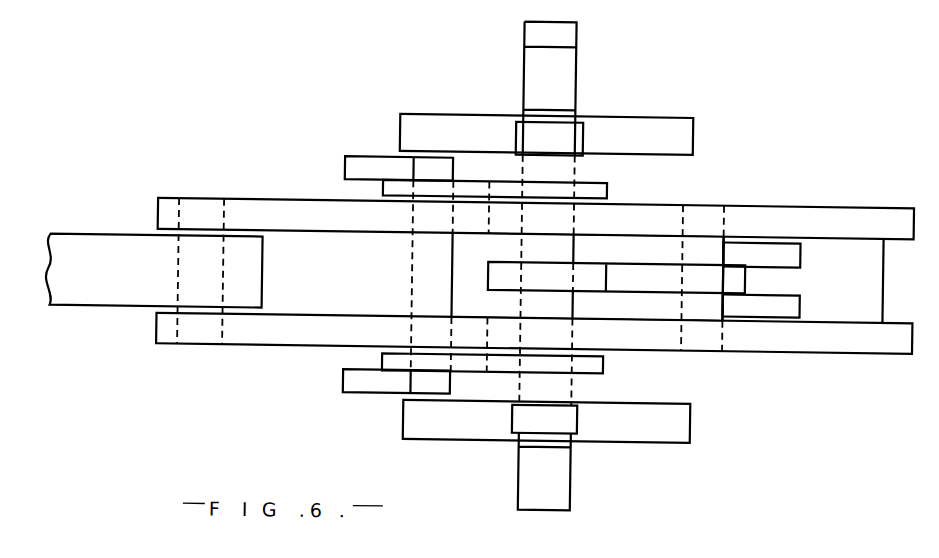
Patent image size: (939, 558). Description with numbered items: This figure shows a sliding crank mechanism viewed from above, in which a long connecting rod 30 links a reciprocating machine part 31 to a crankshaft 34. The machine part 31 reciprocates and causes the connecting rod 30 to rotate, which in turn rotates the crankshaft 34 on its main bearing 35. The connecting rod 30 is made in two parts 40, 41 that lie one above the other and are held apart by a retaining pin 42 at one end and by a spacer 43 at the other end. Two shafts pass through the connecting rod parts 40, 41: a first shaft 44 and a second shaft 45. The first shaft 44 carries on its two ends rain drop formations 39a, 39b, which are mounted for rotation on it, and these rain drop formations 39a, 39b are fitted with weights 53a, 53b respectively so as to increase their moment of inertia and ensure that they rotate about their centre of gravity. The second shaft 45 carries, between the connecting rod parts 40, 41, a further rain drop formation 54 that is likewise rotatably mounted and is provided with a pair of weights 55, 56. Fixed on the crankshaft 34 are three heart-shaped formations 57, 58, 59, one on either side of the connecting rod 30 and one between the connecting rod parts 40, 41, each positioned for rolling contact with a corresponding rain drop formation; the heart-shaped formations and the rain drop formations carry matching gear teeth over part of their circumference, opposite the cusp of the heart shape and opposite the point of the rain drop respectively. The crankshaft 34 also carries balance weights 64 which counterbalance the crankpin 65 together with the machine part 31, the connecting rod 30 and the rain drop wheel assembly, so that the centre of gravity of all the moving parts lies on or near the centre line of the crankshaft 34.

The connecting rod 30 is at (535, 282).
The reciprocating part of a machine 31 is at (108, 298).
The crankshaft 34 is at (554, 60).
The main bearing 35 is at (582, 136).
The rain drop formation 39a is at (396, 365).
The rain drop formation 39b is at (391, 192).
The connecting rod part 40 is at (316, 216).
The connecting rod part 41 is at (274, 352).
The retaining pin 42 is at (203, 283).
The spacer 43 is at (900, 267).
The first shaft 44 is at (425, 282).
The second shaft 45 is at (707, 308).
The weight 53a is at (351, 384).
The weight 53b is at (378, 167).
The further rain drop formation 54 is at (795, 250).
The weight 55 is at (790, 254).
The weight 56 is at (787, 302).
The heart-shaped formation 57 is at (595, 366).
The heart-shaped formation 58 is at (588, 286).
The heart-shaped formation 59 is at (606, 189).
The balance weights 64 is at (691, 134).
The crankpin 65 is at (538, 245).